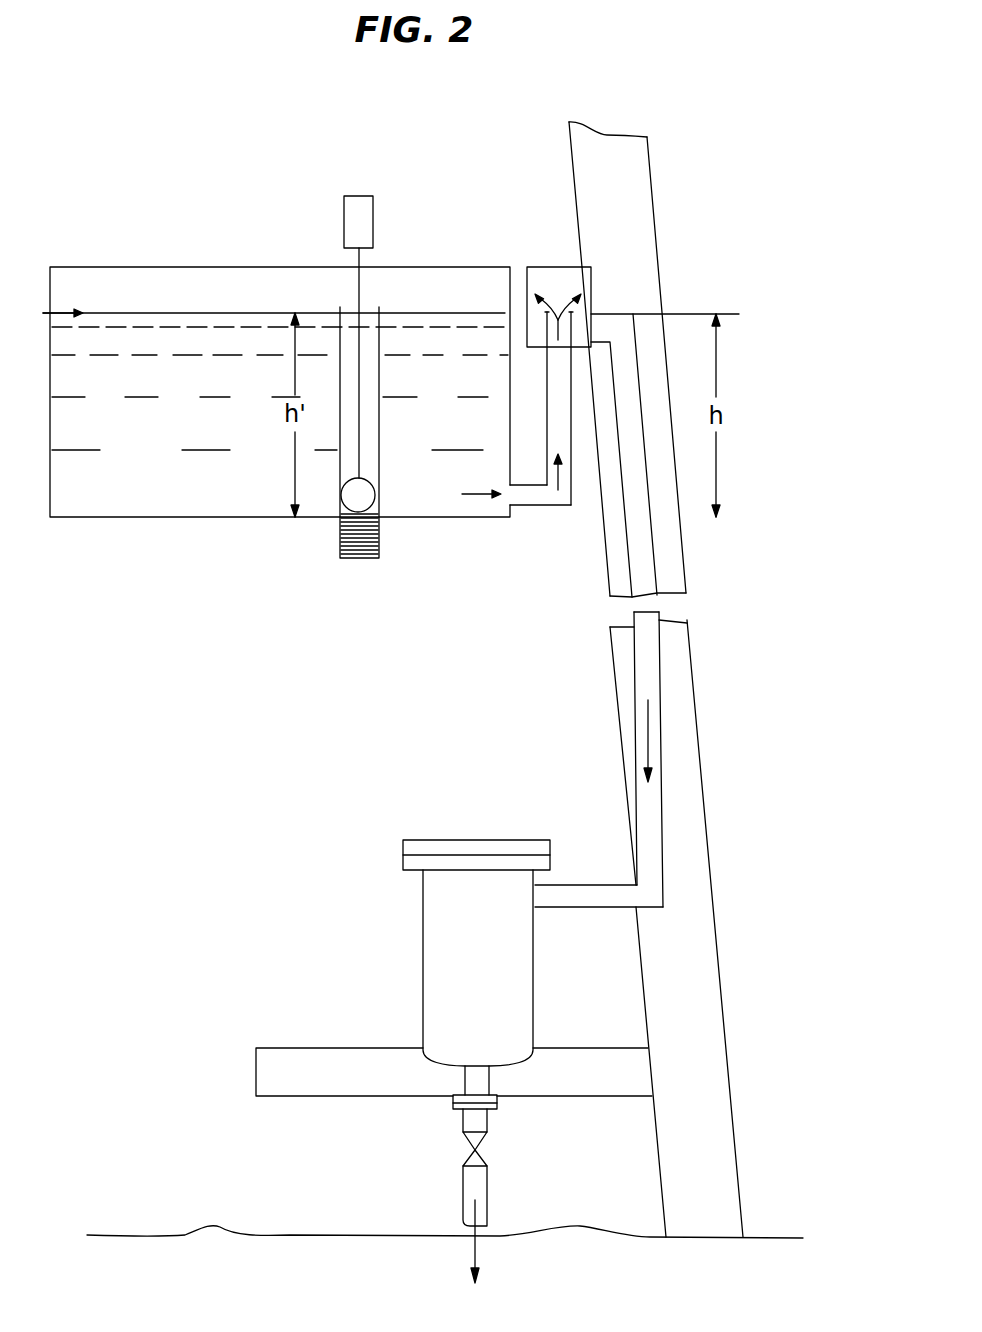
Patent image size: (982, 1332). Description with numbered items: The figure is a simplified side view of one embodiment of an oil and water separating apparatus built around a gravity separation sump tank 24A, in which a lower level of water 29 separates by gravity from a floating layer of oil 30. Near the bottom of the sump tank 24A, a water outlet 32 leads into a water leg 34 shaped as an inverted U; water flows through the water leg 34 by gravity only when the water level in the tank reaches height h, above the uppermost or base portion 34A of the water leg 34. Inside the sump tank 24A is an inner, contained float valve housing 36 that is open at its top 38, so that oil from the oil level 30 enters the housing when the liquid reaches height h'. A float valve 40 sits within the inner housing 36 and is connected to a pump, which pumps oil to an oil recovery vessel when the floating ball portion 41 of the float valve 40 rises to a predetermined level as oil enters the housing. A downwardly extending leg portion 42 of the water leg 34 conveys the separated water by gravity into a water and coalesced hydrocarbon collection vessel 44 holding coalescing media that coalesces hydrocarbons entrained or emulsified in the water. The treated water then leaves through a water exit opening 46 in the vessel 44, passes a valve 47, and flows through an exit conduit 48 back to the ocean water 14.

The ocean water 14 is at (281, 1252).
The gravity separation sump tank 24A is at (495, 198).
The water 29 is at (455, 434).
The oil 30 is at (435, 310).
The water outlet 32 is at (510, 492).
The water leg 34 is at (571, 422).
The base portion of water leg 34A is at (613, 312).
The float valve housing 36 is at (372, 378).
The top of float valve housing 38 is at (340, 308).
The float valve 40 is at (363, 217).
The floating ball portion 41 is at (375, 480).
The downwardly extending leg portion 42 is at (650, 637).
The water and coalesced hydrocarbon collection vessel 44 is at (466, 926).
The water exit opening 46 is at (468, 1067).
The valve 47 is at (490, 1140).
The exit conduit 48 is at (480, 1188).